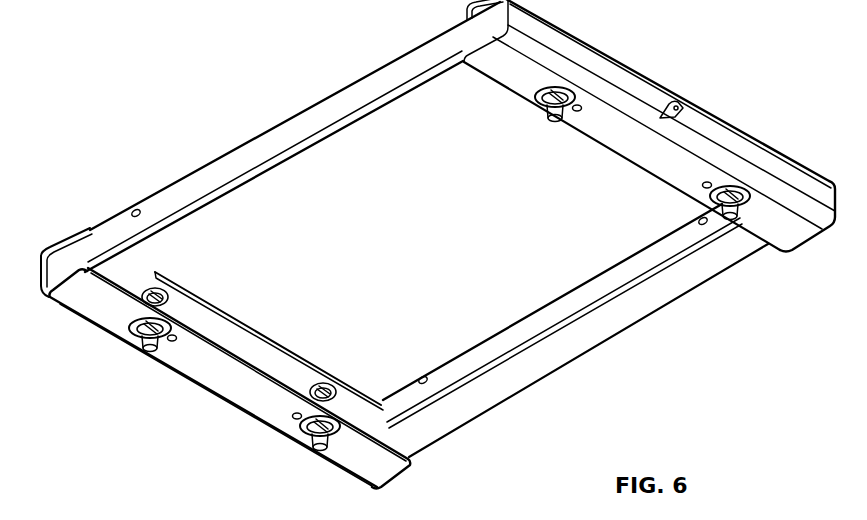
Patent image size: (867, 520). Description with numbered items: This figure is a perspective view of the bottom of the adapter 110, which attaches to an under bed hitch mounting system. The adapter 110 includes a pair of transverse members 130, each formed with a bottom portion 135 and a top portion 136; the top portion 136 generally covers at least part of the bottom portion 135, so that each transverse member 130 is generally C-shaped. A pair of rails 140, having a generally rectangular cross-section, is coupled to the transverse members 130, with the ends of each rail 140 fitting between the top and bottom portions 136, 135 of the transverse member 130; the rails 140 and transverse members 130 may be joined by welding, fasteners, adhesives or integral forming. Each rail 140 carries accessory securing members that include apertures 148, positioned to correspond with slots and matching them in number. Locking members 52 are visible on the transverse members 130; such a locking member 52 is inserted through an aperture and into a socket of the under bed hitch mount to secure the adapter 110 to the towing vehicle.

The adapter 110 is at (146, 50).
The transverse member 130 is at (573, 53).
The bottom portion 135 is at (507, 77).
The top portion 136 is at (262, 327).
The rail 140 is at (248, 143).
The aperture 148 is at (128, 214).
The locking member 52 is at (553, 121).